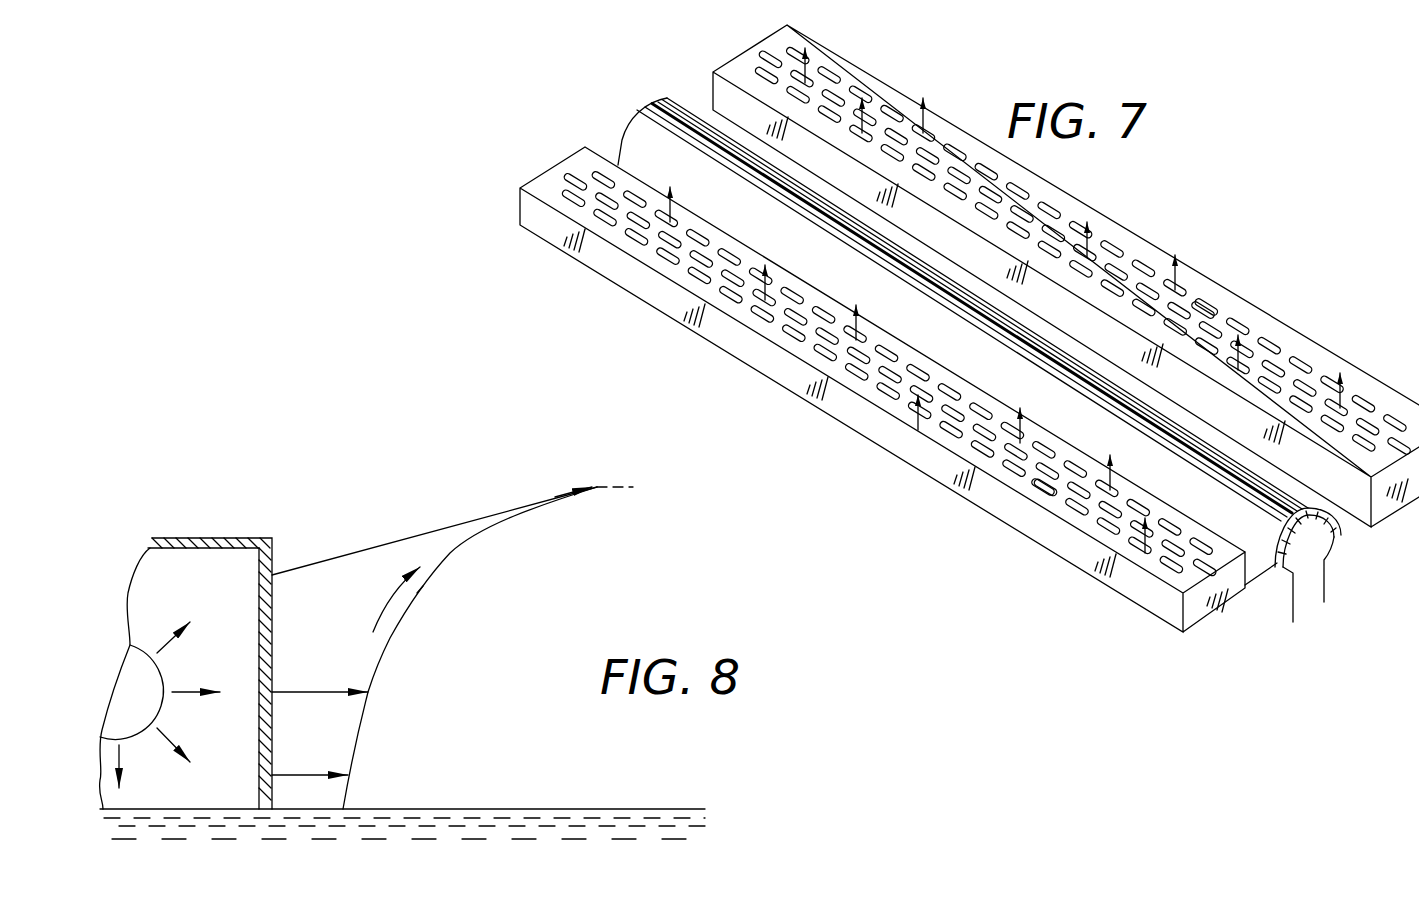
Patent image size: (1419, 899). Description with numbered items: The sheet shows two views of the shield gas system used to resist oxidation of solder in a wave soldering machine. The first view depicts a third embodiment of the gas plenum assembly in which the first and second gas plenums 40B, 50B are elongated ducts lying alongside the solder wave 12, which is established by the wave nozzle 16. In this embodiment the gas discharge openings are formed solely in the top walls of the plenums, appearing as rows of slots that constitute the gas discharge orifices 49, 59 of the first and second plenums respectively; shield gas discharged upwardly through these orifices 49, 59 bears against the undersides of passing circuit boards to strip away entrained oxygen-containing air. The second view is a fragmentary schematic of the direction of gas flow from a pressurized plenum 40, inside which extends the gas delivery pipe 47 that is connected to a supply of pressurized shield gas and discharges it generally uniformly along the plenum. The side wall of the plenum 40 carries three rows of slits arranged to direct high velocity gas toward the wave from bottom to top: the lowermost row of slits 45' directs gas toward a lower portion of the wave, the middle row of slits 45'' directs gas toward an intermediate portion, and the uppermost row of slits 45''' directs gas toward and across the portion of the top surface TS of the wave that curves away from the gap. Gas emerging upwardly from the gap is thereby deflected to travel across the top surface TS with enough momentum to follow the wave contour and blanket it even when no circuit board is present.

In FIG. 7, the second gas plenum 50B is at (1298, 328).
In FIG. 7, the first gas plenum 40B is at (865, 437).
In FIG. 7, the gas discharge orifices 59 is at (1212, 306).
In FIG. 7, the gas discharge orifices 49 is at (1043, 487).
In FIG. 7, the first solder wave 12 is at (1342, 532).
In FIG. 8, the first solder wave 12 is at (475, 540).
In FIG. 7, the wave nozzle 16 is at (1325, 587).
In FIG. 8, the first gas plenum 40 is at (211, 535).
In FIG. 8, the gas delivery pipe 47 is at (132, 700).
In FIG. 8, the lowermost row of slits 45' is at (309, 749).
In FIG. 8, the middle row of slits 45'' is at (319, 665).
In FIG. 8, the uppermost row of slits 45''' is at (434, 531).
In FIG. 8, the top surface of the wave TS is at (607, 485).